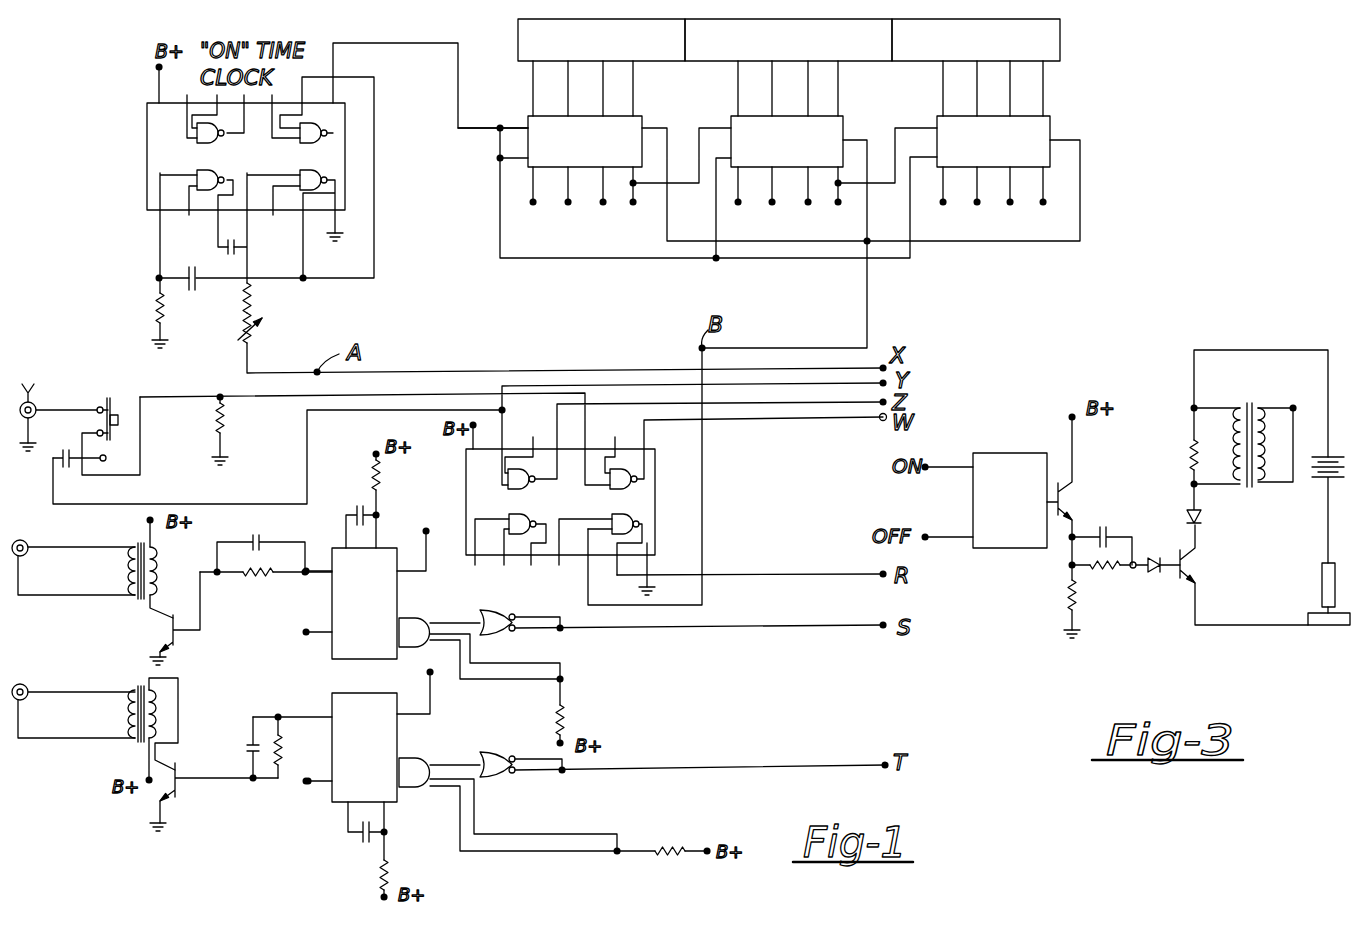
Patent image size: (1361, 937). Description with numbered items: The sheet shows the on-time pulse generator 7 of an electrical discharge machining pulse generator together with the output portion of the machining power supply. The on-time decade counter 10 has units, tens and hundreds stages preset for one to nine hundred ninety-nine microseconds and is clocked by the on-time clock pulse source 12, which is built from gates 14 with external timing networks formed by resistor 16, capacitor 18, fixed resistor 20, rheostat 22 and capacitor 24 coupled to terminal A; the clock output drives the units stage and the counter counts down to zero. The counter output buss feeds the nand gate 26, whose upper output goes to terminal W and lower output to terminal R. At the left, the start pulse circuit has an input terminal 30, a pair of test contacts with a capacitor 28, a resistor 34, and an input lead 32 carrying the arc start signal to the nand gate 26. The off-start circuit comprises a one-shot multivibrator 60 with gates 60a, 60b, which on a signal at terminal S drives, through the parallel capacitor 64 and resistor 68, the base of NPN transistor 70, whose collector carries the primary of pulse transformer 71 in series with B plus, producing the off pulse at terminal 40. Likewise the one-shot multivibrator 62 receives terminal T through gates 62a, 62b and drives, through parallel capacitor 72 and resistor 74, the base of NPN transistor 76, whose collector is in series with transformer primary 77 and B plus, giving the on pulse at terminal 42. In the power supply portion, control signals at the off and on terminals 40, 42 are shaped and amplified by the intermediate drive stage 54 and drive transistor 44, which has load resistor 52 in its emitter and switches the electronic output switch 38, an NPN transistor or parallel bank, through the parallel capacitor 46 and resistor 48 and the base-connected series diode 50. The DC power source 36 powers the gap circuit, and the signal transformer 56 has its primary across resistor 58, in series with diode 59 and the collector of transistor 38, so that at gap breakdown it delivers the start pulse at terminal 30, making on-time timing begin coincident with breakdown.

In FIG. 1, the on-time pulse generator 7 is at (460, 285).
In FIG. 1, the on-time decade counter 10 is at (690, 270).
In FIG. 1, the on-time clock pulse source 12 is at (300, 284).
In FIG. 1, the gates 14 is at (204, 137).
In FIG. 1, the resistor 16 is at (156, 316).
In FIG. 1, the capacitor 18 is at (198, 274).
In FIG. 1, the fixed resistor 20 is at (244, 300).
In FIG. 1, the rheostat 22 is at (238, 340).
In FIG. 1, the capacitor 24 is at (238, 243).
In FIG. 1, the nand gate 26 is at (662, 490).
In FIG. 1, the capacitor 28 is at (67, 443).
In FIG. 1, the input terminal 30 is at (37, 402).
In FIG. 3, the input terminal 30 is at (1297, 408).
In FIG. 1, the input lead 32 is at (338, 412).
In FIG. 1, the resistor 34 is at (227, 420).
In FIG. 3, the DC power source 36 is at (1319, 487).
In FIG. 3, the electronic output switch 38 is at (1190, 578).
In FIG. 1, the off terminal 40 is at (20, 540).
In FIG. 3, the off terminal 40 is at (927, 533).
In FIG. 1, the on terminal 42 is at (22, 686).
In FIG. 3, the on terminal 42 is at (927, 463).
In FIG. 3, the drive transistor 44 is at (1070, 487).
In FIG. 3, the capacitor 46 is at (1105, 535).
In FIG. 3, the resistor 48 is at (1108, 570).
In FIG. 3, the series diode 50 is at (1155, 572).
In FIG. 3, the load resistor 52 is at (1073, 596).
In FIG. 3, the intermediate drive stage 54 is at (1027, 541).
In FIG. 3, the signal transformer 56 is at (1248, 486).
In FIG. 3, the resistor 58 is at (1195, 450).
In FIG. 3, the diode 59 is at (1202, 517).
In FIG. 1, the one-shot multivibrator 60 is at (385, 562).
In FIG. 1, the gate 60a is at (418, 618).
In FIG. 1, the gate 60b is at (498, 615).
In FIG. 1, the one-shot multivibrator 62 is at (397, 736).
In FIG. 1, the gate 62a is at (430, 764).
In FIG. 1, the gate 62b is at (502, 773).
In FIG. 1, the capacitor 64 is at (260, 537).
In FIG. 1, the resistor 68 is at (247, 578).
In FIG. 1, the transistor 70 is at (171, 623).
In FIG. 1, the pulse transformer 71 is at (154, 561).
In FIG. 1, the capacitor 72 is at (253, 747).
In FIG. 1, the resistor 74 is at (282, 748).
In FIG. 1, the transistor 76 is at (177, 793).
In FIG. 1, the transformer primary 77 is at (158, 710).